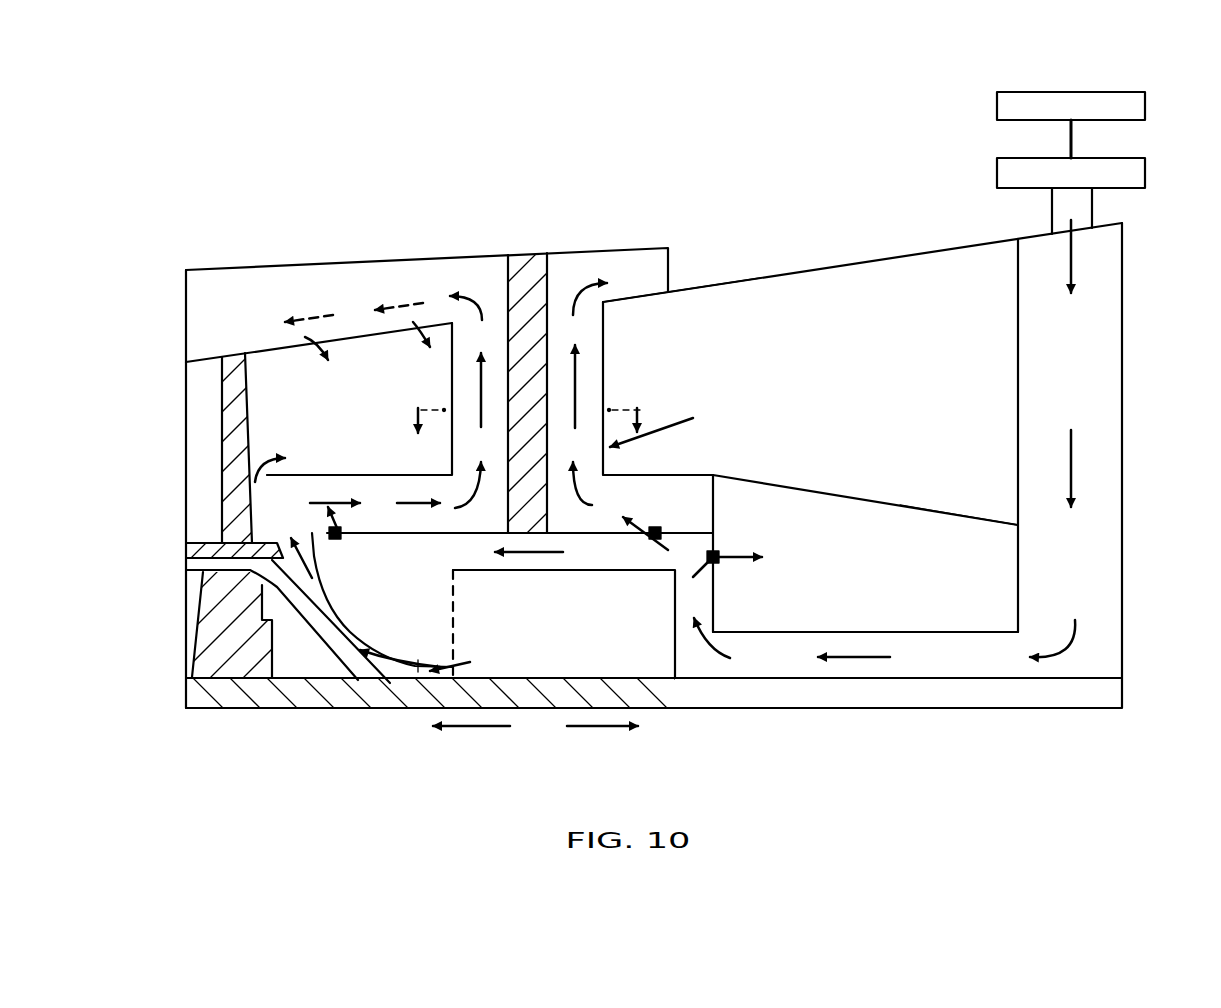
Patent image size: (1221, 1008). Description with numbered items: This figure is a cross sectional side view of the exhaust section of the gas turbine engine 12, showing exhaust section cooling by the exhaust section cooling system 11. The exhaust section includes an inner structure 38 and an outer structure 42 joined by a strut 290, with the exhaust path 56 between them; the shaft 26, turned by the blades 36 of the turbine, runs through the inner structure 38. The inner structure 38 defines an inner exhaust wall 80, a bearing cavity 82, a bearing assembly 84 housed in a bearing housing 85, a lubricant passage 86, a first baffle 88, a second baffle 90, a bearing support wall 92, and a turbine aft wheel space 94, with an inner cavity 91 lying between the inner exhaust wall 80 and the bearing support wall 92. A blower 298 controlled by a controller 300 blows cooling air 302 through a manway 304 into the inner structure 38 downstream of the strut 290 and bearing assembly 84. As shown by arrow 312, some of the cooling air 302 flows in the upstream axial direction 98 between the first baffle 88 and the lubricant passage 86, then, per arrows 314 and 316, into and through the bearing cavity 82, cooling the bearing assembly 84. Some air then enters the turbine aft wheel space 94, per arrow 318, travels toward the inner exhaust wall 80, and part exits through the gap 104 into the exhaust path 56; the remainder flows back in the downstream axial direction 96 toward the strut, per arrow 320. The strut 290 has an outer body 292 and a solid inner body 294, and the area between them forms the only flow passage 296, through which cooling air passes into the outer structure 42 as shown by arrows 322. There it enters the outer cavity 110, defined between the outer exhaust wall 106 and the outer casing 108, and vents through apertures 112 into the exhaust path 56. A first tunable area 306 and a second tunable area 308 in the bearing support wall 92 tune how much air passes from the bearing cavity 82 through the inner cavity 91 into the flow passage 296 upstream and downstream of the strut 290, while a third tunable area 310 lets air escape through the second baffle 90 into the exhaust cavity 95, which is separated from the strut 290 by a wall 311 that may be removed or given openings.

The exhaust section cooling system 11 is at (627, 148).
The gas turbine engine 12 is at (847, 145).
The shaft 26 is at (313, 700).
The blades 36 is at (222, 515).
The inner structure 38 is at (970, 510).
The outer structure 42 is at (940, 248).
The exhaust path 56 is at (815, 393).
The inner exhaust wall 80 is at (313, 475).
The bearing cavity 82 is at (620, 561).
The bearing assembly 84 is at (537, 665).
The bearing housing 85 is at (677, 660).
The lubricant passage 86 is at (790, 697).
The first baffle 88 is at (808, 632).
The second baffle 90 is at (715, 612).
The inner cavity 91 is at (366, 525).
The bearing support wall 92 is at (605, 532).
The turbine aft wheel space 94 is at (418, 668).
The exhaust cavity 95 is at (881, 568).
The downstream axial direction 96 is at (598, 728).
The upstream axial direction 98 is at (478, 728).
The gap 104 is at (258, 478).
The outer exhaust wall 106 is at (292, 353).
The outer casing 108 is at (273, 263).
The outer cavity 110 is at (294, 295).
The apertures 112 is at (280, 365).
The strut 290 is at (673, 425).
The outer body 292 is at (603, 463).
The inner body 294 is at (505, 450).
The flow passage 296 is at (465, 396).
The blower 298 is at (1125, 158).
The controller 300 is at (1125, 92).
The cooling air 302 is at (1072, 248).
The manway 304 is at (1098, 530).
The first tunable area 306 is at (325, 525).
The second tunable area 308 is at (657, 530).
The third tunable area 310 is at (716, 548).
The wall 311 is at (714, 520).
The arrow 312 is at (860, 657).
The arrow 314 is at (730, 658).
The arrow 316 is at (520, 558).
The arrow 318 is at (380, 652).
The arrow 320 is at (405, 487).
The arrows 322 is at (512, 412).